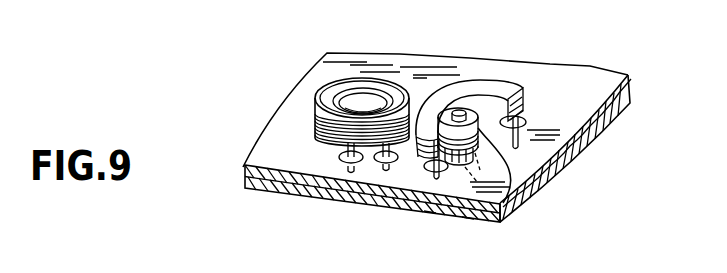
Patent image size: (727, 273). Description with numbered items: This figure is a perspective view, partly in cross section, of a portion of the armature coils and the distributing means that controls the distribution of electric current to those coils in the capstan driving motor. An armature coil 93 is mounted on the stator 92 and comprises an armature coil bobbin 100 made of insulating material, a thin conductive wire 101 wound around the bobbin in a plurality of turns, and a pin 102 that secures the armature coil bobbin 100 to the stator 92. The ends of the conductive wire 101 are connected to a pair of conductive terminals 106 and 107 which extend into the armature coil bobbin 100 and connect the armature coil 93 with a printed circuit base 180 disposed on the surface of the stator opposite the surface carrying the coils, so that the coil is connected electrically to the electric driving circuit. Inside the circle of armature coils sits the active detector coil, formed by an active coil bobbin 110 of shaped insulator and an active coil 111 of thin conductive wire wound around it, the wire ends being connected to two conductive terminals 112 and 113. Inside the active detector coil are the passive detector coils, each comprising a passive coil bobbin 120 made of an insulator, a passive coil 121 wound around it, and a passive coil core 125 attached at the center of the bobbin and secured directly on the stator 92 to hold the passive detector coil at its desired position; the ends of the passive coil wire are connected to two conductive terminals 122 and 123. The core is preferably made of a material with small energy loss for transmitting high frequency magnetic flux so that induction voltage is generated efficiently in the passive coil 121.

The stator 92 is at (630, 76).
The armature coil 93 is at (310, 124).
The armature coil bobbin 100 is at (326, 86).
The conductive wire 101 is at (331, 136).
The pin 102 is at (360, 110).
The conductive terminal 106 is at (306, 198).
The conductive terminal 107 is at (350, 212).
The active coil bobbin 110 is at (490, 85).
The active coil 111 is at (518, 91).
The conductive terminal 112 is at (430, 211).
The conductive terminal 113 is at (525, 118).
The passive coil bobbin 120 is at (548, 168).
The passive coil 121 is at (519, 206).
The conductive terminal 122 is at (468, 221).
The conductive terminal 123 is at (515, 211).
The passive coil core 125 is at (462, 112).
The printed circuit base 180 is at (626, 108).